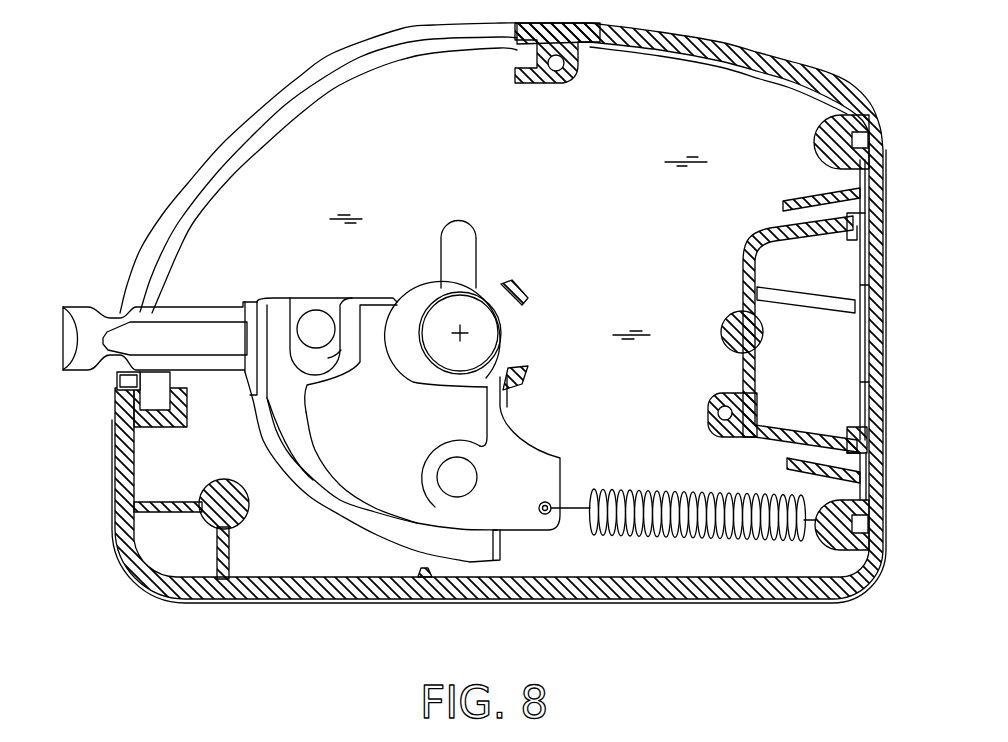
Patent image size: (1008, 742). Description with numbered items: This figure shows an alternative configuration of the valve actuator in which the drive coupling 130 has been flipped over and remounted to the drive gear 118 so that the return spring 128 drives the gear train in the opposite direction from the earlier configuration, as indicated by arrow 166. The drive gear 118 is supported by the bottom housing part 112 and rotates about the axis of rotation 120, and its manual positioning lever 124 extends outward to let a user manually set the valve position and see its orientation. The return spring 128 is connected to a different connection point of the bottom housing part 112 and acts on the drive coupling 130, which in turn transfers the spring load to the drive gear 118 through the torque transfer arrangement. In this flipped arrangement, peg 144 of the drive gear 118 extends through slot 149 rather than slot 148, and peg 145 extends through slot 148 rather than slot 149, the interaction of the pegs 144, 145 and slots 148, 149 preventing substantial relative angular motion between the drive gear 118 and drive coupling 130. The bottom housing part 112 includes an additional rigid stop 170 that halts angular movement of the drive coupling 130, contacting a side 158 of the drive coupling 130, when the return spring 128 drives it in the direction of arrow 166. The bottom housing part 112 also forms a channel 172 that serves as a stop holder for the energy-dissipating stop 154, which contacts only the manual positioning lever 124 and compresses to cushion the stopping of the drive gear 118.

The bottom housing part 112 is at (708, 595).
The drive gear 118 is at (372, 545).
The axis of rotation 120 is at (462, 333).
The manual positioning lever 124 is at (150, 317).
The return spring 128 is at (700, 537).
The drive coupling 130 is at (337, 470).
The peg 144 is at (455, 492).
The peg 145 is at (313, 317).
The slot 148 is at (330, 357).
The slot 149 is at (486, 492).
The stop 154 is at (149, 396).
The side 158 is at (514, 413).
The arrow 166 is at (50, 228).
The stop 170 is at (512, 384).
The channel 172 is at (117, 393).